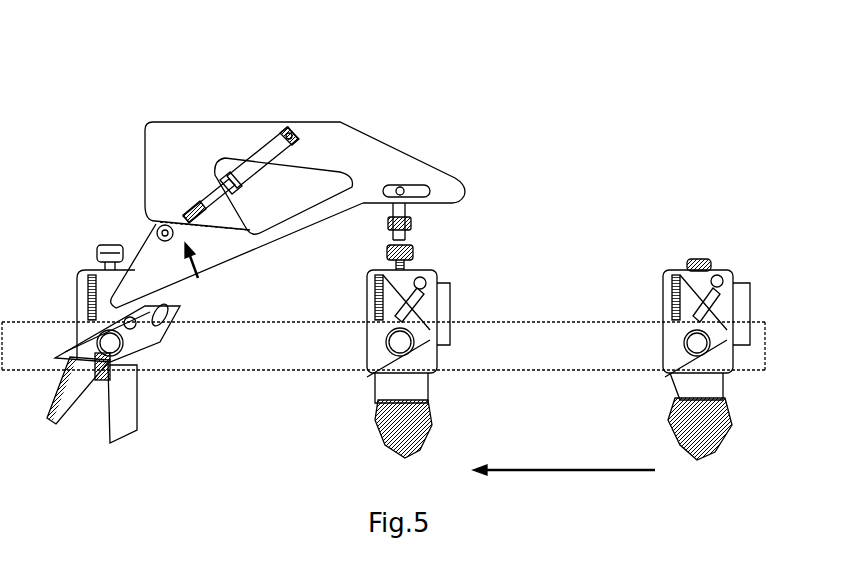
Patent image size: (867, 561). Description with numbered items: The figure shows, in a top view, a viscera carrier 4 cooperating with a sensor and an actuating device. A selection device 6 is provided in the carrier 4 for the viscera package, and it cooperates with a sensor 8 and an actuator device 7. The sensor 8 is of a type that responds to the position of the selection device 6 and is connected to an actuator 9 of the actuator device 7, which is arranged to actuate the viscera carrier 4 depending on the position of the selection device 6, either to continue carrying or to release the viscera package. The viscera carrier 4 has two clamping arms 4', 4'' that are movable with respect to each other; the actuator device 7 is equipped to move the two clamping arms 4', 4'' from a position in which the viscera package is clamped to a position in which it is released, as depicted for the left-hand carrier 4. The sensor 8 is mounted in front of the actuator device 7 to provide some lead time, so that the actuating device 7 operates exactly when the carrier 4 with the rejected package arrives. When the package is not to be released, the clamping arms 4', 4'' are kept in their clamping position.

The viscera carrier 4 is at (402, 365).
The clamping arm 4' is at (165, 435).
The clamping arm 4'' is at (78, 433).
The selection device 6 is at (102, 230).
The actuator device 7 is at (377, 123).
The sensor 8 is at (424, 223).
The actuator 9 is at (245, 138).